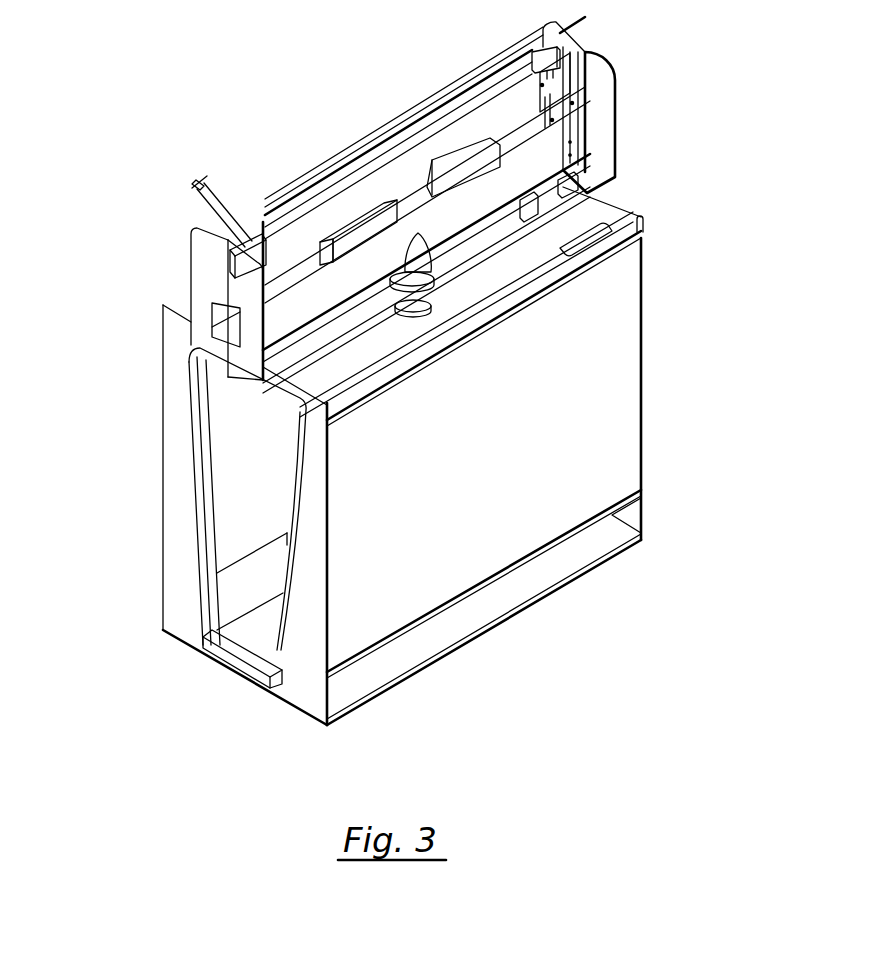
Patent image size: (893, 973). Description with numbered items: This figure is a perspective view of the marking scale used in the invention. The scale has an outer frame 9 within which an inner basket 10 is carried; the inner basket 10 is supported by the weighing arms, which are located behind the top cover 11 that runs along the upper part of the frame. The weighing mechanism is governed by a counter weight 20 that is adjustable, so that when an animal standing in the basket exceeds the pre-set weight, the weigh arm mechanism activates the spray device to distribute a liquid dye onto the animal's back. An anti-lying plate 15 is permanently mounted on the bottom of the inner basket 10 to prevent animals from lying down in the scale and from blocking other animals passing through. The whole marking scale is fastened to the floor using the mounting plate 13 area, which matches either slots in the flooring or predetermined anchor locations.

The outer frame 9 is at (627, 332).
The inner basket 10 is at (233, 462).
The top cover 11 is at (563, 165).
The mounting plate 13 is at (538, 583).
The anti-lying plate 15 is at (233, 648).
The counter weight 20 is at (213, 228).